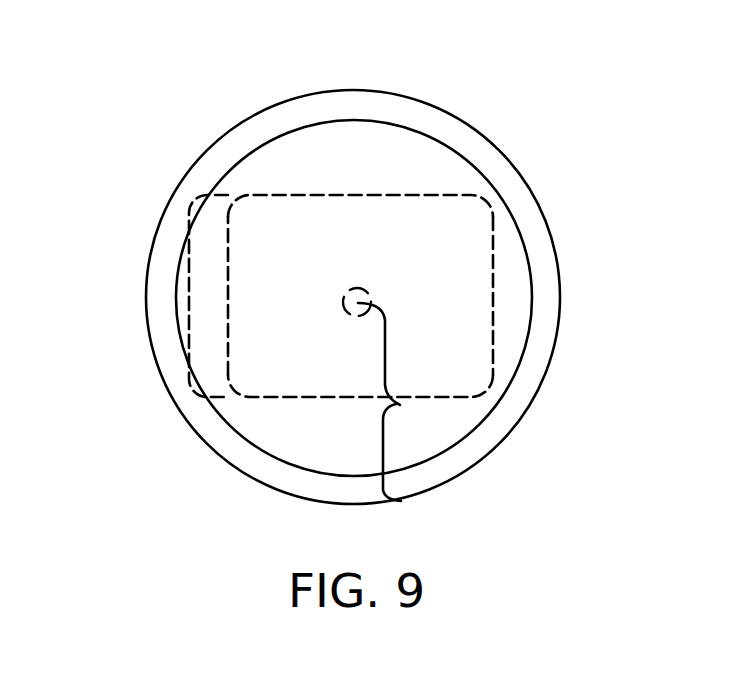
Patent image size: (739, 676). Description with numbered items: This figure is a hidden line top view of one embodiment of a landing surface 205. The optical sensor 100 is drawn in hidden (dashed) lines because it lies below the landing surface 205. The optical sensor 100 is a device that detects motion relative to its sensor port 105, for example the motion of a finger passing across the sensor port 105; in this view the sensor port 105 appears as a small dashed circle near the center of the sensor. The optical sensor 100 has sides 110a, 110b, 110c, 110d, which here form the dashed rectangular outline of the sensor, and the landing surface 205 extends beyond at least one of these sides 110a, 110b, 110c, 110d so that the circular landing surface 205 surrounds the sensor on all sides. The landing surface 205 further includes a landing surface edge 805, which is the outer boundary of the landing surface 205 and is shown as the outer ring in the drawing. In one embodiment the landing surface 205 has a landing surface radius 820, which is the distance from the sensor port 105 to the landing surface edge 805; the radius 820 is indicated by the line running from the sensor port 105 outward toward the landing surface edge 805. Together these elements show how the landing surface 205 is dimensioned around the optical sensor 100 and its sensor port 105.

The optical sensor 100 is at (371, 268).
The sensor port 105 is at (363, 287).
The side 110a is at (228, 277).
The side 110b is at (280, 398).
The side 110c is at (493, 248).
The side 110d is at (360, 193).
The landing surface 205 is at (355, 147).
The landing surface edge 805 is at (228, 147).
The landing surface radius 820 is at (405, 403).